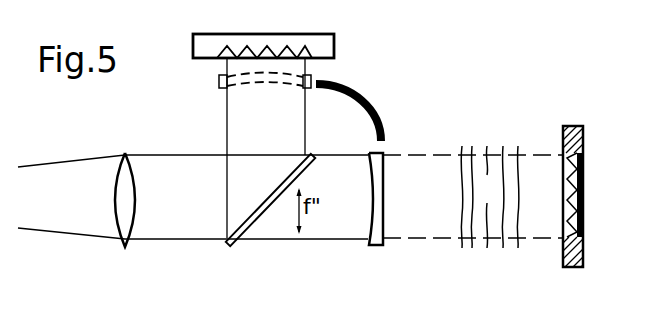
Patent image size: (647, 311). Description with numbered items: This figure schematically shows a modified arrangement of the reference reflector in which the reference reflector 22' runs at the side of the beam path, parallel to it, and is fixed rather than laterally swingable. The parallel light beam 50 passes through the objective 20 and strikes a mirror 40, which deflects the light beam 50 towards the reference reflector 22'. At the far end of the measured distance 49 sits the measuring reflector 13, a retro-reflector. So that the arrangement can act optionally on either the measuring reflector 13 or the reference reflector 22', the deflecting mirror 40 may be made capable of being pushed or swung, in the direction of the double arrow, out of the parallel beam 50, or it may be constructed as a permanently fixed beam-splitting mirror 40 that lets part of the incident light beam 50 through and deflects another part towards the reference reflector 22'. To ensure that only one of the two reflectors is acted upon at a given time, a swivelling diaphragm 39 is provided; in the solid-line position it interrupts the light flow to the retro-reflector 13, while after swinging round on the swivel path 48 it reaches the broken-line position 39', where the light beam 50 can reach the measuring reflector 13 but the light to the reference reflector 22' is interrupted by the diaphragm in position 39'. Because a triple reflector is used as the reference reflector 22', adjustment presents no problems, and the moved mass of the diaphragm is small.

The measuring reflector 13 is at (583, 178).
The objective 20 is at (120, 208).
The reference reflector 22' is at (295, 41).
The swivelling diaphragm 39 is at (391, 222).
The swivelling diaphragm position 39' is at (242, 90).
The deflecting mirror 40 is at (273, 215).
The swivel path 48 is at (362, 98).
The measured distance 49 is at (498, 201).
The light beam 50 is at (193, 240).